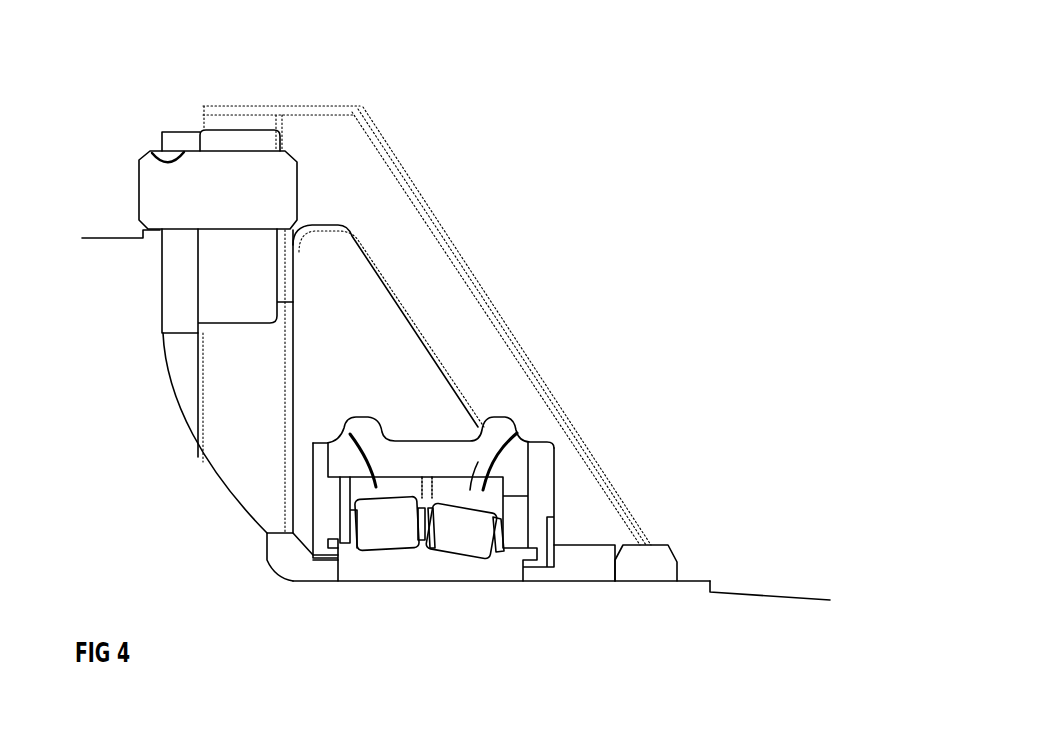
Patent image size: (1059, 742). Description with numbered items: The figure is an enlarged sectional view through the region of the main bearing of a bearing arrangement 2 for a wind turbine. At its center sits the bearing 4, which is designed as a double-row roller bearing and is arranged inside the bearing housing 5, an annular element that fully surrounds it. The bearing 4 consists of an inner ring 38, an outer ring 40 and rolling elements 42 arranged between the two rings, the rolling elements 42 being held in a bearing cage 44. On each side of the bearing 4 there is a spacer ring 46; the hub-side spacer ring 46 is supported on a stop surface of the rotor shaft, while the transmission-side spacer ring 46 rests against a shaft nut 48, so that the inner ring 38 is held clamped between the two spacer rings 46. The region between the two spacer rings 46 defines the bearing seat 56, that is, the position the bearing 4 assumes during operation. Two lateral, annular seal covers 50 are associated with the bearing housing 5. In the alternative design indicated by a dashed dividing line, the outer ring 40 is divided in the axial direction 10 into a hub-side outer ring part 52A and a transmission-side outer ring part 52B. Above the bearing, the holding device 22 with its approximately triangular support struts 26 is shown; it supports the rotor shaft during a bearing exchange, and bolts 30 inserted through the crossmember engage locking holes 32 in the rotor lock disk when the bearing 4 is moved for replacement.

The bearing arrangement 2 is at (580, 150).
The bearing 4 is at (388, 569).
The bearing housing 5 is at (448, 437).
The axial direction 10 is at (705, 243).
The holding device 22 is at (390, 188).
The support struts 26 is at (443, 278).
The bolts 30 is at (217, 183).
The locking holes 32 is at (152, 153).
The inner ring 38 is at (490, 575).
The outer ring 40 is at (517, 433).
The rolling elements 42 is at (383, 522).
The bearing cage 44 is at (423, 537).
The spacer ring 46 is at (312, 573).
The shaft nut 48 is at (648, 570).
The seal covers 50 is at (542, 495).
The hub-side outer ring part 52A is at (350, 436).
The transmission-side outer ring part 52B is at (470, 490).
The bearing seat 56 is at (437, 595).